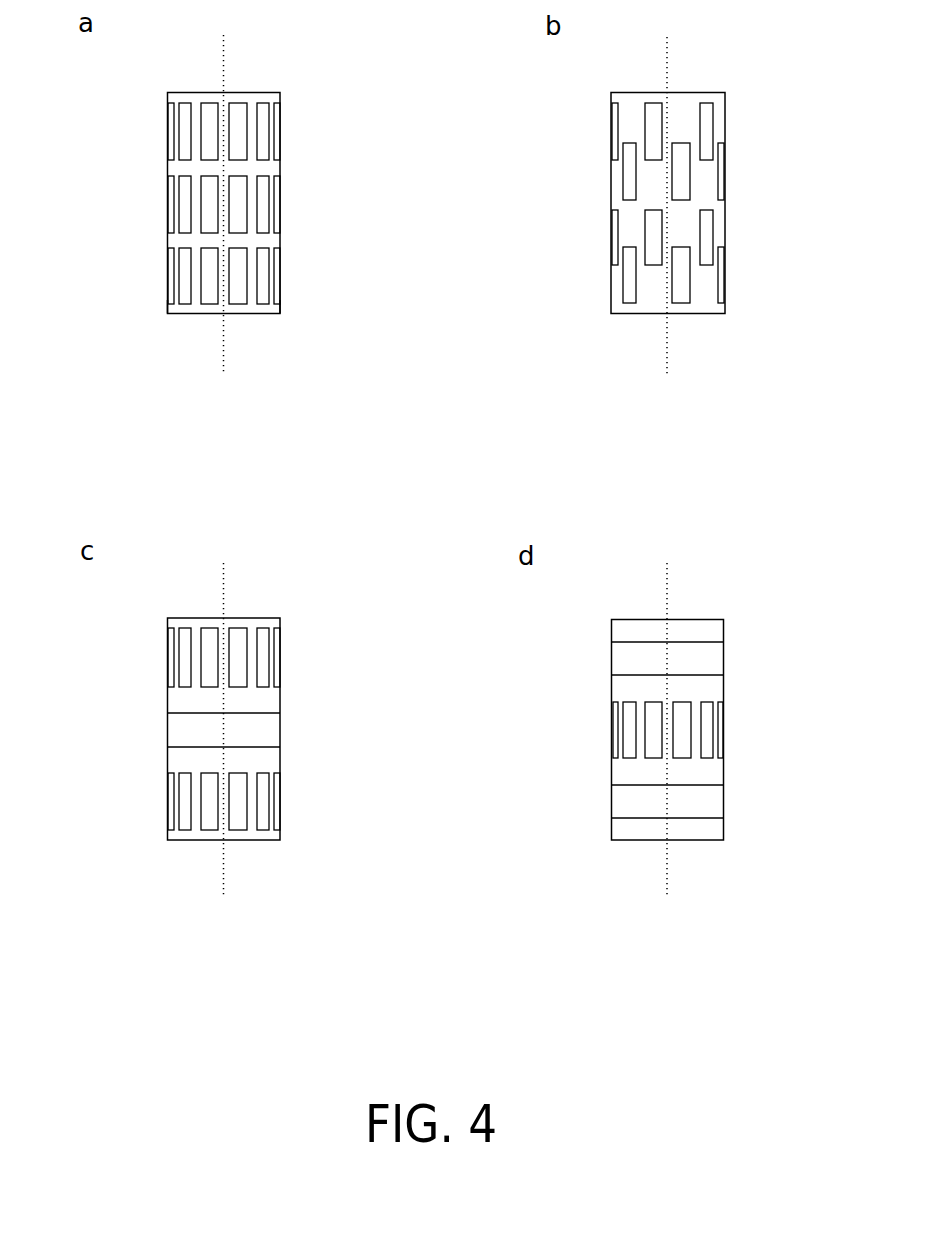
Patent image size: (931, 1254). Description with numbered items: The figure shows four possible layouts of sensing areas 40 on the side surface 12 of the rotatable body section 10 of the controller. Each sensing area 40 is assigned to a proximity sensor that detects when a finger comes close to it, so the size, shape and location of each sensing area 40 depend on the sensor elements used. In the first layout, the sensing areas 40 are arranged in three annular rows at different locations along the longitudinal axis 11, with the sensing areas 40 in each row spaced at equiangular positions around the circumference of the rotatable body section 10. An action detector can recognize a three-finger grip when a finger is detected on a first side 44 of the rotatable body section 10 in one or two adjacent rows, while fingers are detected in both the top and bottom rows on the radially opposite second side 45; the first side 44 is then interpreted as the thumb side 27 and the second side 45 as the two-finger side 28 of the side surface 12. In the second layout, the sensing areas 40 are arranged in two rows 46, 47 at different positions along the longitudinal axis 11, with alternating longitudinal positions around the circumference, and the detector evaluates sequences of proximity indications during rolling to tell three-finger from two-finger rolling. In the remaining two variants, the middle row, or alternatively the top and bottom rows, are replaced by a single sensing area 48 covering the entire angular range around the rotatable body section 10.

The rotatable body section 10 is at (230, 224).
The longitudinal axis 11 is at (227, 330).
The side surface 12 is at (187, 308).
The first angularly limited portion (thumb side) 27 is at (165, 312).
The second angularly limited portion (two-finger side) 28 is at (282, 318).
The sensing area 40 is at (207, 209).
The first side 44 is at (101, 338).
The second side 45 is at (352, 342).
The row of sensing areas 46 is at (605, 152).
The row of sensing areas 47 is at (607, 252).
The single sensing area 48 is at (262, 735).